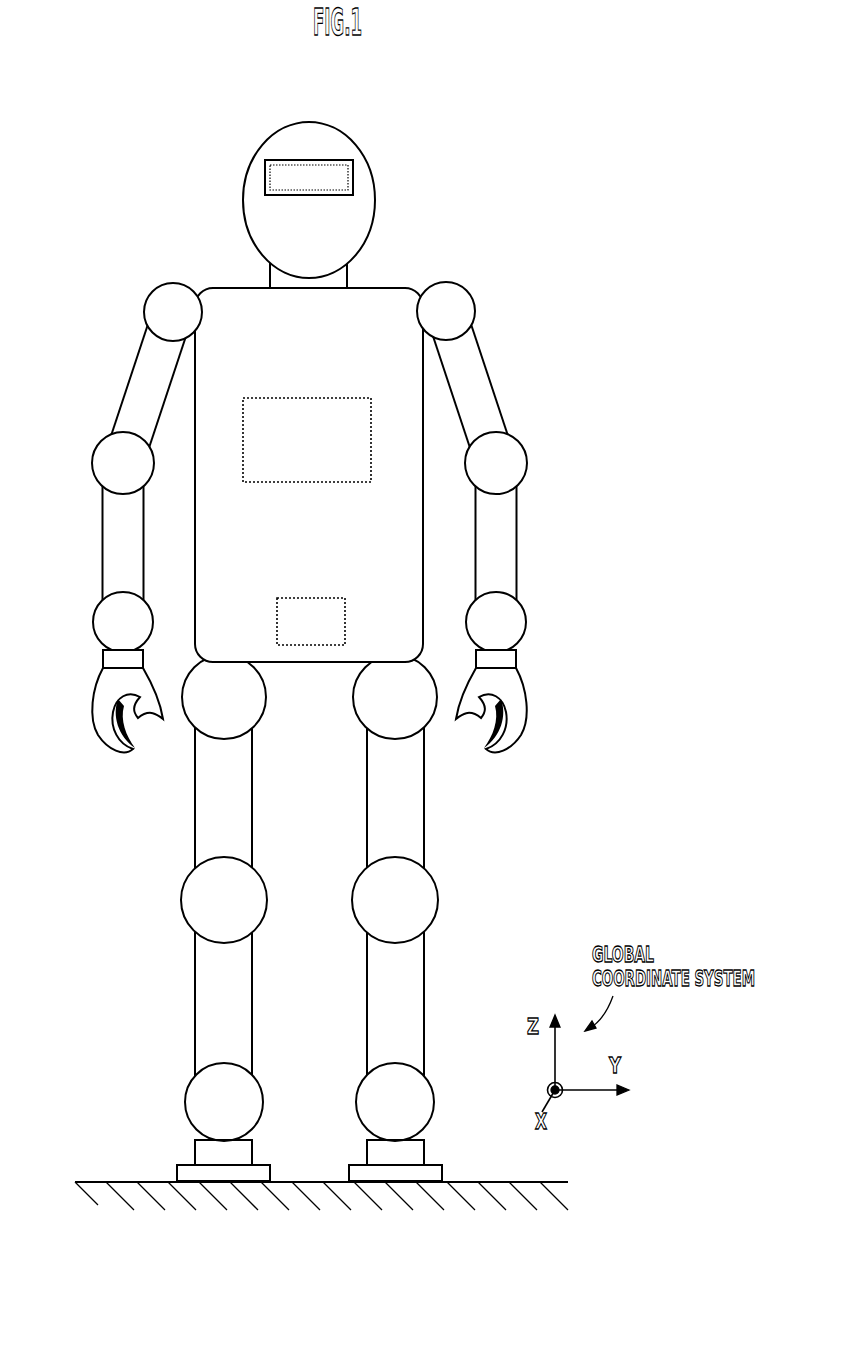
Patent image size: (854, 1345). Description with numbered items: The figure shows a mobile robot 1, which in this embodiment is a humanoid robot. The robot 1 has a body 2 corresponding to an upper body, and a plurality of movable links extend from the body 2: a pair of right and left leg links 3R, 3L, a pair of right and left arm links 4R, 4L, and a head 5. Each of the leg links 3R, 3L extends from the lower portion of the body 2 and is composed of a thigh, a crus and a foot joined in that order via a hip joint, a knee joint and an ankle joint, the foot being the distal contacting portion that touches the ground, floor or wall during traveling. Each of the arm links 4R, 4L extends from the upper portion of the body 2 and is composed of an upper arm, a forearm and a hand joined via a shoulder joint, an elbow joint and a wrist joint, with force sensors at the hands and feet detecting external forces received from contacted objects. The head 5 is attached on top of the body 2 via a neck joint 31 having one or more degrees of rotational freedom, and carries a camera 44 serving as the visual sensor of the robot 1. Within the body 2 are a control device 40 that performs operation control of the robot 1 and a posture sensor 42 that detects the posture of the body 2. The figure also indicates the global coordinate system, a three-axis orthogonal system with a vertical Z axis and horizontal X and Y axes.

The mobile robot 1 is at (481, 170).
The body 2 is at (378, 300).
The head 5 is at (333, 140).
The neck joint 31 is at (268, 278).
The camera 44 is at (283, 160).
The control device 40 is at (290, 398).
The posture sensor 42 is at (310, 598).
The right arm link 4R is at (84, 503).
The left arm link 4L is at (545, 501).
The right leg link 3R is at (158, 860).
The left leg link 3L is at (459, 859).